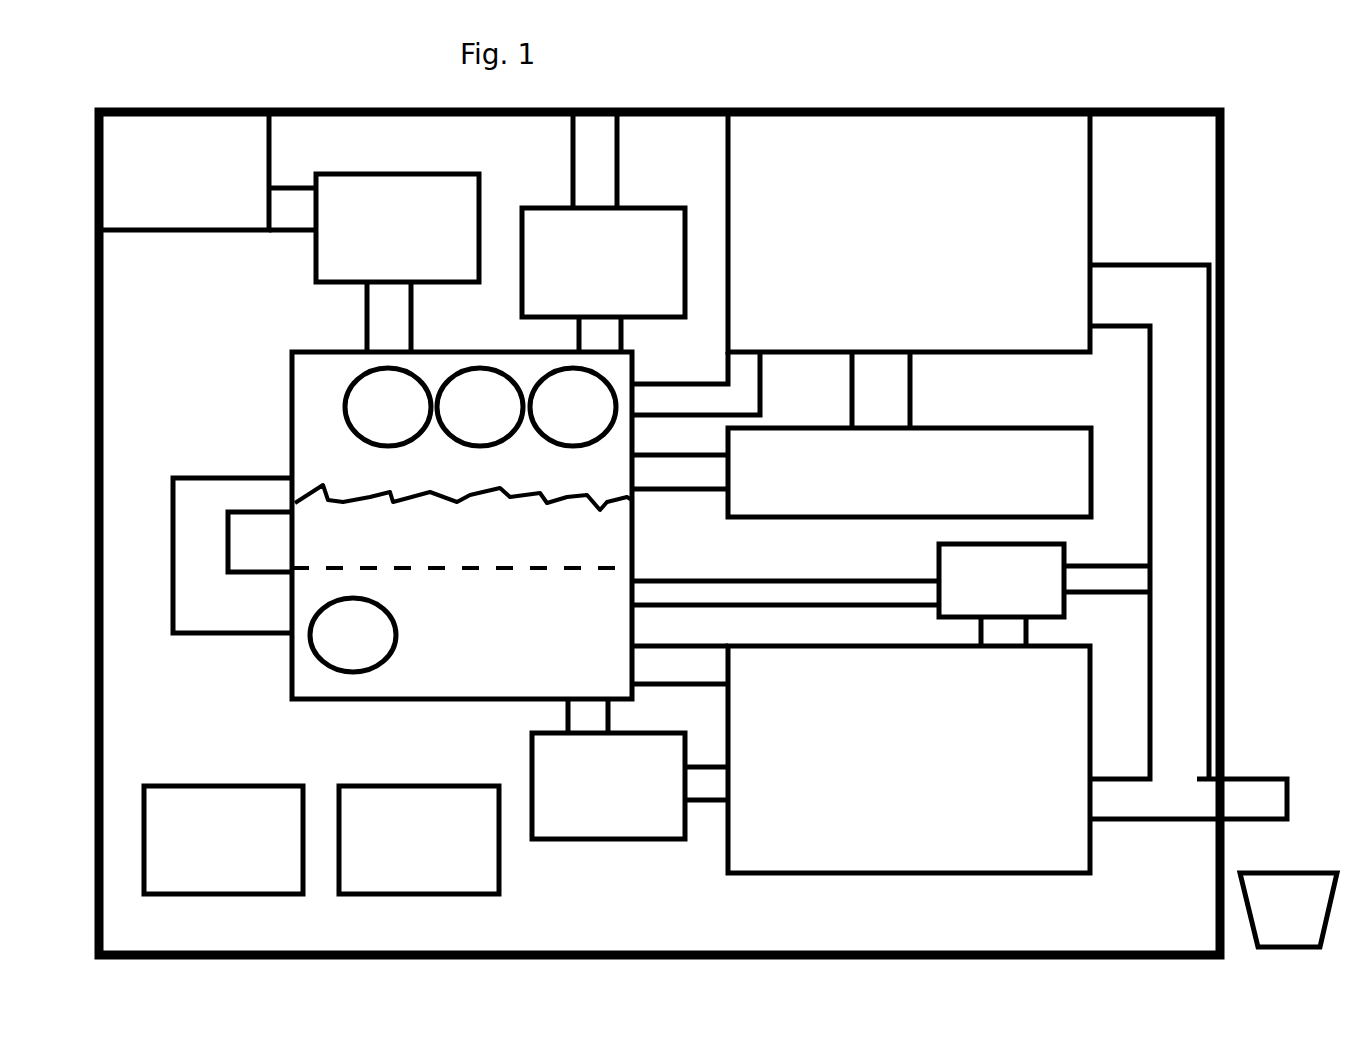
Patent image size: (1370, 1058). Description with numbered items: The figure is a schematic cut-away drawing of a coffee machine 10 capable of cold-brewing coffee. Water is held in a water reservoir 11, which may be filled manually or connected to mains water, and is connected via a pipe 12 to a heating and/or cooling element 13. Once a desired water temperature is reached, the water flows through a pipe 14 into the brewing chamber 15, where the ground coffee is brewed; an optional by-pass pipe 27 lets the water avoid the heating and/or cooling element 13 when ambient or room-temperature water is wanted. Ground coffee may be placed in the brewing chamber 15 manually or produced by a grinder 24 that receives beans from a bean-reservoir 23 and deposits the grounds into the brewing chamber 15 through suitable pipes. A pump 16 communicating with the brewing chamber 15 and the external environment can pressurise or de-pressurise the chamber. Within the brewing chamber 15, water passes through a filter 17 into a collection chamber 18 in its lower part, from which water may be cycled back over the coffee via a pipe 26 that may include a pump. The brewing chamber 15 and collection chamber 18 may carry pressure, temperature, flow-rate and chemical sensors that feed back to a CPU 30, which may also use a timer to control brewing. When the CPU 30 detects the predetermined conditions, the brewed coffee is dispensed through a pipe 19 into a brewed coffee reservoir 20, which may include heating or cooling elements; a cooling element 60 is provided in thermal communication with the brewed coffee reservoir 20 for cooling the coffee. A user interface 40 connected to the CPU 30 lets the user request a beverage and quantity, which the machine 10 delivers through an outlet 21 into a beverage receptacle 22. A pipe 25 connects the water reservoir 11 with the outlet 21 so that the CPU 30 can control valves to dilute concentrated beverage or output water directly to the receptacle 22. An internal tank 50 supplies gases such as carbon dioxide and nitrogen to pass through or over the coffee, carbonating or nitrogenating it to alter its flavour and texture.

The coffee machine 10 is at (1257, 143).
The water reservoir 11 is at (909, 232).
The pipe 12 is at (881, 390).
The heating and/or cooling element 13 is at (909, 472).
The pipe 14 is at (680, 473).
The brewing chamber 15 is at (280, 407).
The pump 16 is at (603, 232).
The filter 17 is at (603, 558).
The collection chamber 18 is at (388, 635).
The pipe 19 is at (680, 665).
The brewed coffee reservoir 20 is at (909, 759).
The outlet 21 is at (1188, 799).
The beverage receptacle 22 is at (1288, 910).
The bean-reservoir 23 is at (184, 171).
The grinder 24 is at (374, 263).
The pipe 25 is at (1149, 522).
The pipe 26 is at (232, 555).
The by-pass pipe 27 is at (696, 386).
The CPU 30 is at (223, 840).
The user interface 40 is at (419, 840).
The internal tank 50 is at (630, 769).
The cooling element 60 is at (891, 595).